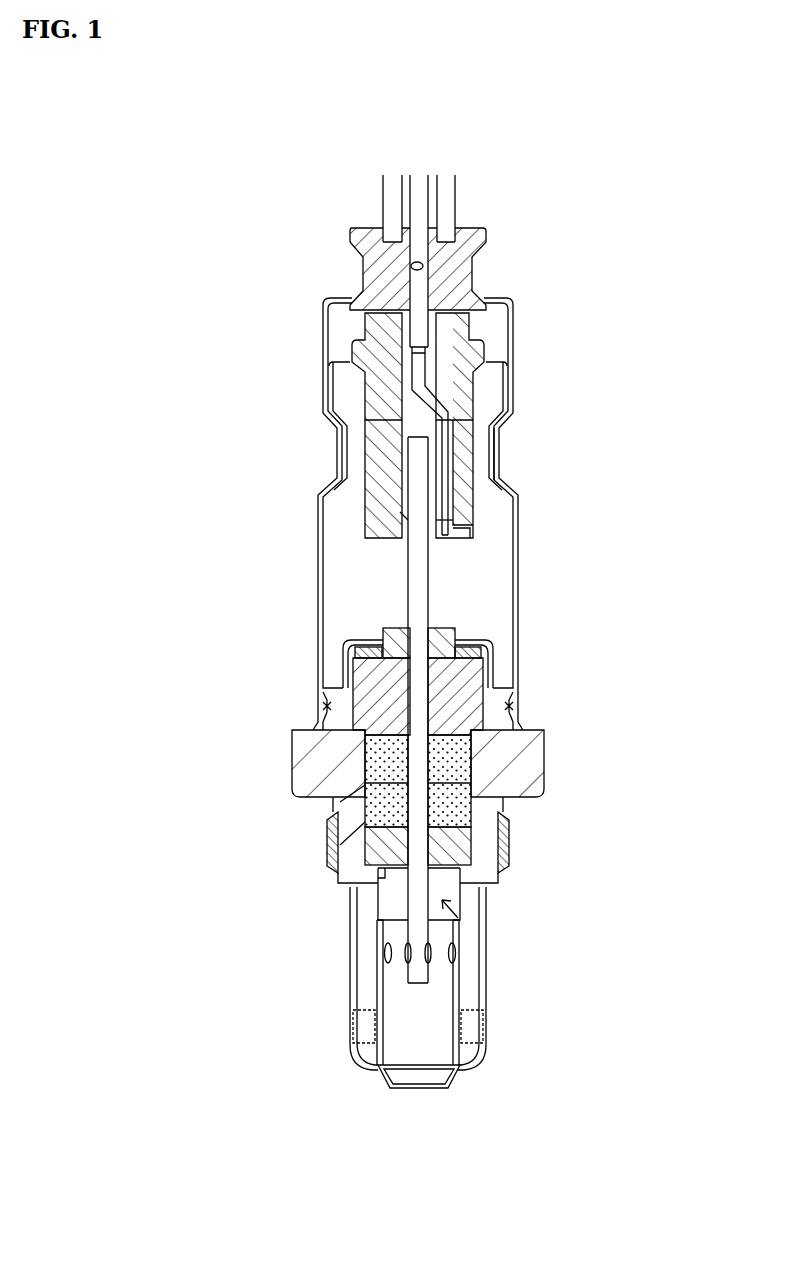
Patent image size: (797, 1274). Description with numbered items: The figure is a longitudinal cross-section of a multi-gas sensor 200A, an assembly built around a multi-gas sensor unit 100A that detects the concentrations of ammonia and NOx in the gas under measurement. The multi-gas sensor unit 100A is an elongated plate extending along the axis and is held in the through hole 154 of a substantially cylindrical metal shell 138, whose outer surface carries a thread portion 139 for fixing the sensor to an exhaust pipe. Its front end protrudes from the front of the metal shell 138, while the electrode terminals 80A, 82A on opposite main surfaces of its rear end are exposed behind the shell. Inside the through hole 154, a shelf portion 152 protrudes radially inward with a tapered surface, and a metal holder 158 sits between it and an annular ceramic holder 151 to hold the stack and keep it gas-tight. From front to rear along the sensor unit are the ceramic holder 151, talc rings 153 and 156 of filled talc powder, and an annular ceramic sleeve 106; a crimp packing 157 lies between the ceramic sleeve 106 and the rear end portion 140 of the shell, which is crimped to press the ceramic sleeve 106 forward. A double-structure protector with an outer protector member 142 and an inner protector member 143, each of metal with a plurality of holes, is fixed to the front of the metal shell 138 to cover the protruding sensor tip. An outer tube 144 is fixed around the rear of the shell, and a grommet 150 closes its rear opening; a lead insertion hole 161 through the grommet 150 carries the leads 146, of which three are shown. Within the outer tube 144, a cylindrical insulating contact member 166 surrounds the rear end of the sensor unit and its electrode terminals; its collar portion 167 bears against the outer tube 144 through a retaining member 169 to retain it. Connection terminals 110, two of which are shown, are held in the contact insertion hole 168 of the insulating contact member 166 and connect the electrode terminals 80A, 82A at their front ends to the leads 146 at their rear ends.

The multi-gas sensor 200A is at (584, 207).
The leads 146 is at (417, 175).
The grommet 150 is at (470, 268).
The lead insertion hole 161 is at (410, 264).
The collar portion 167 is at (351, 345).
The retaining member 169 is at (324, 400).
The contact insertion hole 168 is at (400, 426).
The connection terminals 110 is at (499, 434).
The insulating contact member 166 is at (368, 470).
The outer tube 144 is at (521, 457).
The electrode terminal 82A is at (398, 565).
The electrode terminal 80A is at (428, 540).
The rear end portion of the metal shell 140 is at (490, 640).
The crimp packing 157 is at (497, 662).
The ceramic sleeve 106 is at (470, 703).
The talc ring 156 is at (363, 750).
The metal shell 138 is at (323, 758).
The multi-gas sensor unit 100A is at (428, 777).
The talc ring 153 is at (455, 836).
The thread portion 139 is at (328, 847).
The ceramic holder 151 is at (470, 855).
The shelf portion 152 is at (338, 883).
The metal holder 158 is at (462, 895).
The through hole 154 is at (465, 938).
The outer protector member 142 is at (488, 978).
The inner protector member 143 is at (453, 1083).